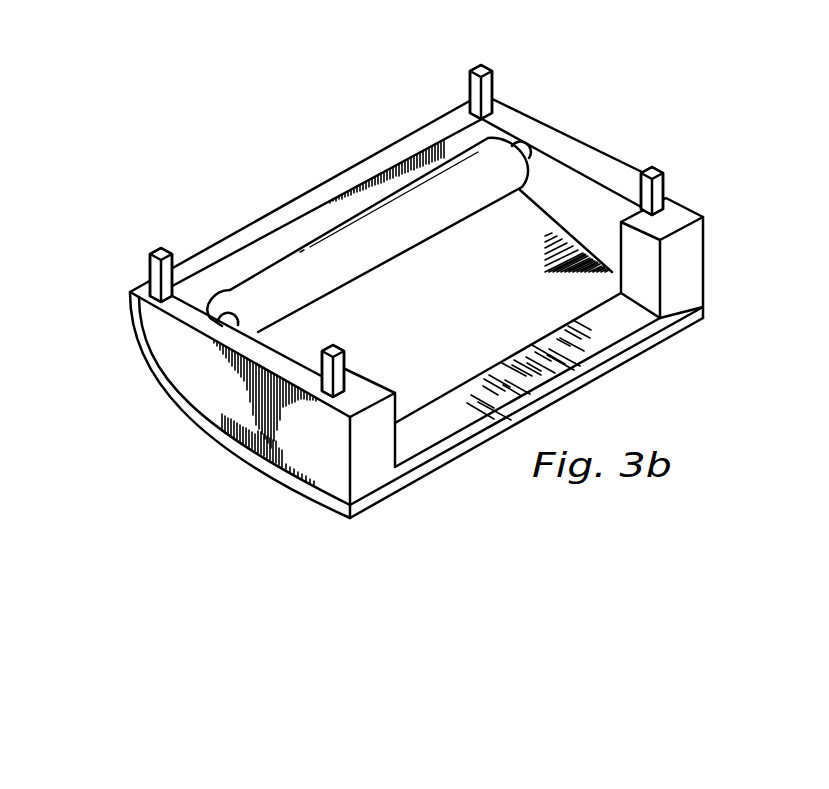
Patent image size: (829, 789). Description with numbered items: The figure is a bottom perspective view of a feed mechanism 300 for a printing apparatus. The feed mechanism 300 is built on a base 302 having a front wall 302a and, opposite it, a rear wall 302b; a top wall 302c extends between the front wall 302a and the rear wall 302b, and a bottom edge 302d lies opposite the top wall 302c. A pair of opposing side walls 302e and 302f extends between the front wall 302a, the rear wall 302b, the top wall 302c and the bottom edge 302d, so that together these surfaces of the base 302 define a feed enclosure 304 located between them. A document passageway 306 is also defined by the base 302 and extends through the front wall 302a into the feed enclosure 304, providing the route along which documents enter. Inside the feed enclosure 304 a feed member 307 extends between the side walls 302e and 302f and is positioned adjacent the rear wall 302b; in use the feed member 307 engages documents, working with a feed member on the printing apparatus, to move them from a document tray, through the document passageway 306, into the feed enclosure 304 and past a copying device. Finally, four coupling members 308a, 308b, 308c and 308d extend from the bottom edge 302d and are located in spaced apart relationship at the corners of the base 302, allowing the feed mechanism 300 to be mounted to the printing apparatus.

The feed mechanism 300 is at (258, 134).
The base 302 is at (116, 297).
The front wall 302a is at (690, 273).
The rear wall 302b is at (128, 335).
The top wall 302c is at (272, 478).
The bottom edge 302d is at (273, 353).
The side wall 302e is at (574, 136).
The side wall 302f is at (213, 407).
The feed enclosure 304 is at (498, 305).
The document passageway 306 is at (630, 245).
The feed member 307 is at (267, 276).
The coupling member 308a is at (346, 370).
The coupling member 308b is at (657, 167).
The coupling member 308c is at (481, 66).
The coupling member 308d is at (158, 250).